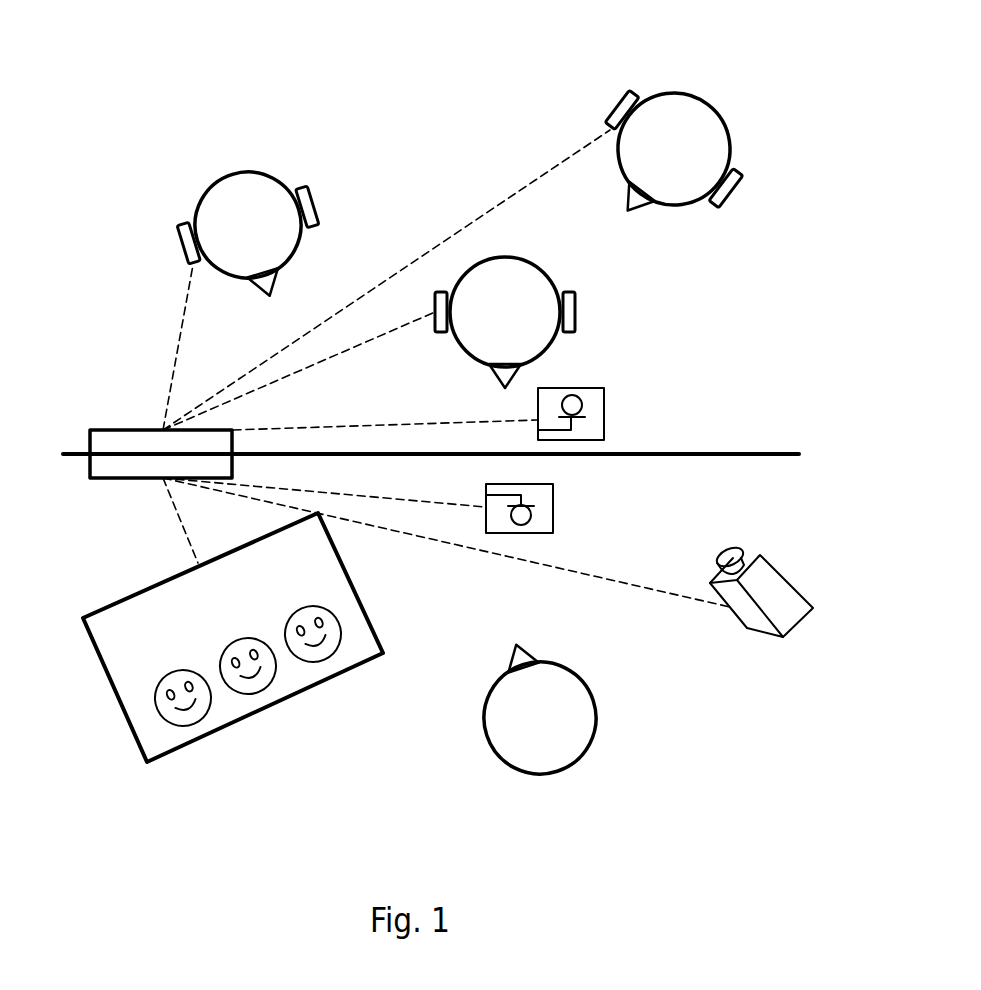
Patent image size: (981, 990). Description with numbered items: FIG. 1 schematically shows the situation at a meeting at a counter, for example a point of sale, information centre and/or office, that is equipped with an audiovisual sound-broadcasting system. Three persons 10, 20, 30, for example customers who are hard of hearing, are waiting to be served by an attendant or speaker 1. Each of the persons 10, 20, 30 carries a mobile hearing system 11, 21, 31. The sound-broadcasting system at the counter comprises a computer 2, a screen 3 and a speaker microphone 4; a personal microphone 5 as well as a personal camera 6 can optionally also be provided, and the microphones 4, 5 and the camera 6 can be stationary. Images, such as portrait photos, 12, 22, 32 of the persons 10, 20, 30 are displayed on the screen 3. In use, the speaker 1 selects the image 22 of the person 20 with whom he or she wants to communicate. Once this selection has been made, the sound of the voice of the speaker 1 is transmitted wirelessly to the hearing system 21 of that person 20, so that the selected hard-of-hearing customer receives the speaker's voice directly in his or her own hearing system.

The speaker 1 is at (598, 697).
The computer 2 is at (115, 430).
The screen 3 is at (150, 585).
The speaker microphone 4 is at (538, 533).
The personal microphone 5 is at (604, 414).
The personal camera 6 is at (748, 630).
The person 10 is at (232, 172).
The mobile hearing system 11 is at (183, 222).
The image 12 is at (195, 724).
The person 20 is at (493, 257).
The mobile hearing system 21 is at (440, 290).
The image 22 is at (260, 692).
The person 30 is at (680, 93).
The mobile hearing system 31 is at (622, 97).
The image 32 is at (325, 660).